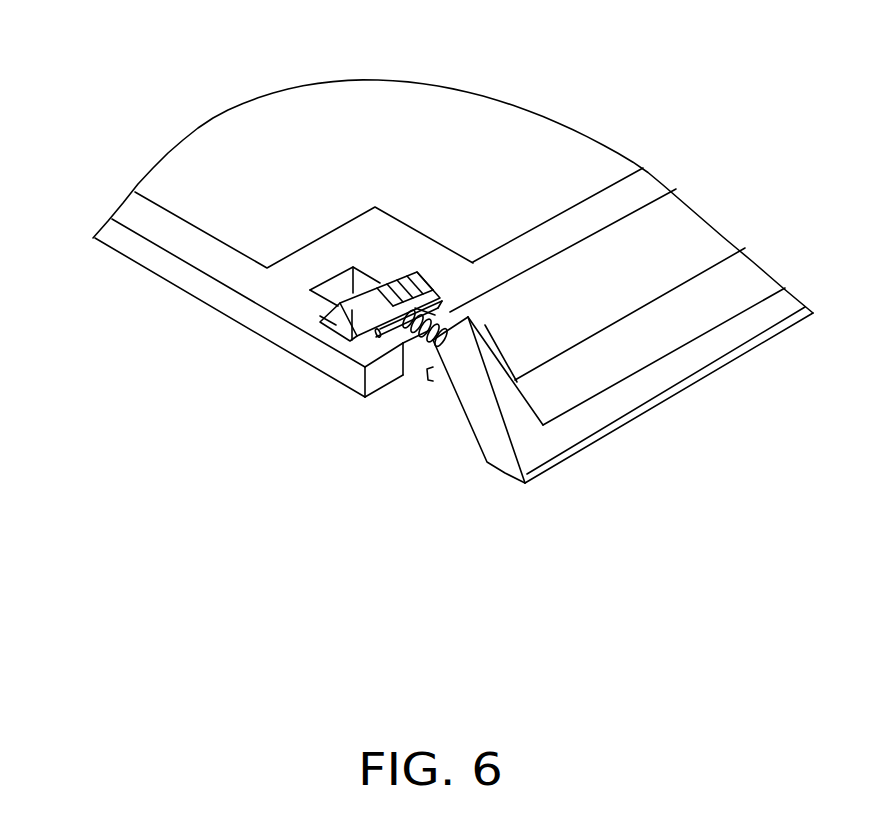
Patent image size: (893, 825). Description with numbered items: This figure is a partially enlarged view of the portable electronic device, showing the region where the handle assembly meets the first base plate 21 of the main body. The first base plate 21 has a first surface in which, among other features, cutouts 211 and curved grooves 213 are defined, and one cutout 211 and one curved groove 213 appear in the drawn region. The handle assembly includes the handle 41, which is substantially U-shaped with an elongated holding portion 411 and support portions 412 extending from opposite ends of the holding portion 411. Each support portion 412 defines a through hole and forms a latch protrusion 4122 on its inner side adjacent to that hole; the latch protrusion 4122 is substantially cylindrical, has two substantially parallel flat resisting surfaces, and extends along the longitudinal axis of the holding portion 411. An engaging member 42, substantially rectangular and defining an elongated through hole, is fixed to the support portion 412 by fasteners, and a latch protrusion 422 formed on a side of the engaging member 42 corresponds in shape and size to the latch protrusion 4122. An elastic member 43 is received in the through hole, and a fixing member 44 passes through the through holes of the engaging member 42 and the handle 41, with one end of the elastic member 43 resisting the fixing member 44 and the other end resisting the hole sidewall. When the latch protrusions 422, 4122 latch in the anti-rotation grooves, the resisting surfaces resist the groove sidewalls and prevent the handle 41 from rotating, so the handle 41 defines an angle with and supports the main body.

The first base plate 21 is at (205, 248).
The cutout 211 is at (334, 285).
The curved groove 213 is at (322, 317).
The handle 41 is at (620, 391).
The holding portion 411 is at (605, 412).
The support portion 412 is at (476, 442).
The latch protrusion 4122 is at (426, 273).
The engaging member 42 is at (390, 170).
The latch protrusion 422 is at (350, 327).
The elastic member 43 is at (447, 312).
The fixing member 44 is at (353, 347).